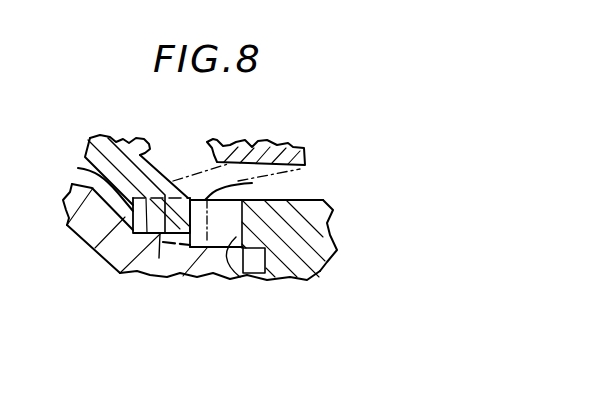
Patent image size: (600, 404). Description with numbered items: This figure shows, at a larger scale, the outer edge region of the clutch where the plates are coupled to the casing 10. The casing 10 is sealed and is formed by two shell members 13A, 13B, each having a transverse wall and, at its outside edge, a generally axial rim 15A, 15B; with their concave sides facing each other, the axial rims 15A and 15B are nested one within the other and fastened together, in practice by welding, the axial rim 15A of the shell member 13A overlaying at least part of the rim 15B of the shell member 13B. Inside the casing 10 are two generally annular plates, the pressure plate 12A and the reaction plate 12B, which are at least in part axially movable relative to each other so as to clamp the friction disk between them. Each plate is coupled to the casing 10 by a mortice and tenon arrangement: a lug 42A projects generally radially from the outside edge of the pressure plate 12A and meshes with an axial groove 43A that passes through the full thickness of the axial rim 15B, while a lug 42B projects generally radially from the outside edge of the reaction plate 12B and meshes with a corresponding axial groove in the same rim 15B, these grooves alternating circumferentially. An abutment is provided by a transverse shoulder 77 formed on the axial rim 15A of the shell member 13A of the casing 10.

The casing 10 is at (70, 250).
The pressure plate 12A is at (100, 138).
The reaction plate 12B is at (248, 141).
The shell member 13A is at (100, 263).
The shell member 13B is at (320, 282).
The axial rim 15A is at (199, 258).
The axial rim 15B is at (88, 183).
The lug 42A is at (157, 260).
The lug 42B is at (229, 255).
The groove 43A is at (238, 266).
The transverse shoulder 77 is at (173, 262).